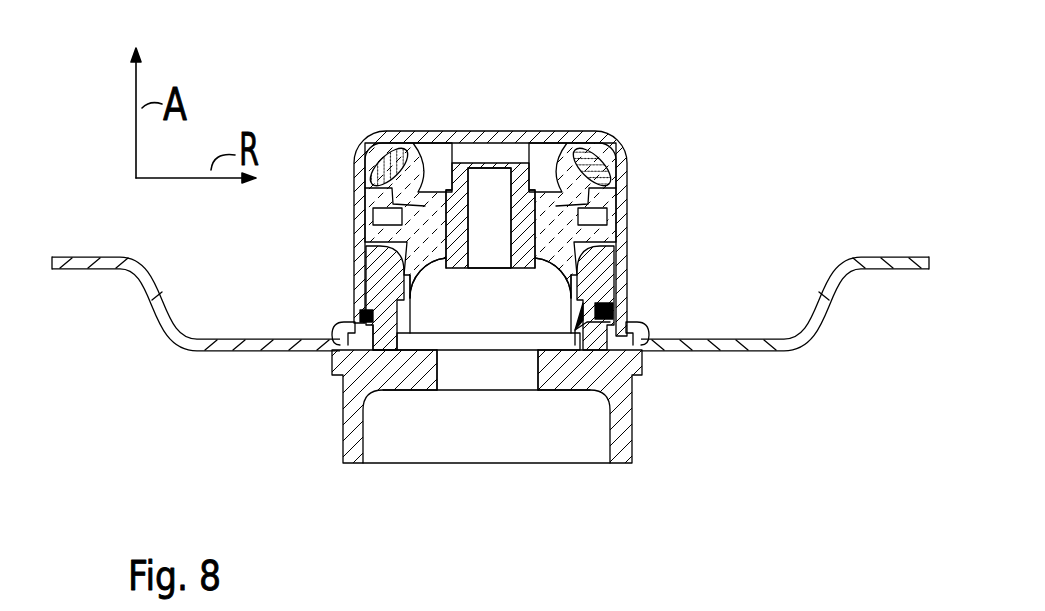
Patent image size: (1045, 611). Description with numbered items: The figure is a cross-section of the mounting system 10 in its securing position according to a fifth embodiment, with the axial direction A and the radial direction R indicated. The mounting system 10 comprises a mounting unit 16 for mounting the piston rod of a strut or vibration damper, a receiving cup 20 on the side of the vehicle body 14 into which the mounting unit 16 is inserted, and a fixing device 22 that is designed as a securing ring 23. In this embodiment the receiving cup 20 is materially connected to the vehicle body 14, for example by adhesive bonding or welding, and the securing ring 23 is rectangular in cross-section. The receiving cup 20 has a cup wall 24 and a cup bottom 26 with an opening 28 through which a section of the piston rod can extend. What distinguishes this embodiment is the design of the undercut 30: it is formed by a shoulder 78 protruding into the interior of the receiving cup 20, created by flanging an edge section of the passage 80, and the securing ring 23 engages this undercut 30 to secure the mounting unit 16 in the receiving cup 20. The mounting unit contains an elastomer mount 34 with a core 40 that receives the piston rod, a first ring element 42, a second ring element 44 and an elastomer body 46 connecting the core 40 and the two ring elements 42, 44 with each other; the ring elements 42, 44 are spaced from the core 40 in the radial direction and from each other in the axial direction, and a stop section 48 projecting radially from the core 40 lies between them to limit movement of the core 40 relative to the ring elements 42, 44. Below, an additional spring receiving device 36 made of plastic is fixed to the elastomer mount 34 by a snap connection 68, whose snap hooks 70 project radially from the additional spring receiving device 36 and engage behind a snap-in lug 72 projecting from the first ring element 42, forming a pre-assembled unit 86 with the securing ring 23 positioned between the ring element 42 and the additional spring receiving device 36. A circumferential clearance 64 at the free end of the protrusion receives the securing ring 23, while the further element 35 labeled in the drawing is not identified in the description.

The mounting system 10 is at (658, 139).
The vehicle body 14 is at (871, 262).
The mounting unit 16 is at (626, 198).
The receiving cup 20 is at (403, 140).
The fixing device 22 is at (620, 293).
The securing ring 23 is at (620, 313).
The cup wall 24 is at (620, 240).
The cup bottom 26 is at (552, 143).
The opening 28 is at (533, 143).
The undercut 30 is at (355, 315).
The elastomer mount 34 is at (427, 173).
The cavity 35 is at (531, 378).
The additional spring receiving device 36 is at (632, 406).
The core 40 is at (478, 150).
The first ring element 42 is at (614, 262).
The second ring element 44 is at (592, 135).
The elastomer body 46 is at (363, 188).
The stop section 48 is at (600, 217).
The circumferential clearance 64 is at (406, 301).
The snap connection 68 is at (572, 310).
The snap hooks 70 is at (634, 328).
The snap-in lug 72 is at (576, 352).
The shoulder 78 is at (355, 323).
The passage 80 is at (385, 322).
The pre-assembled unit 86 is at (455, 368).